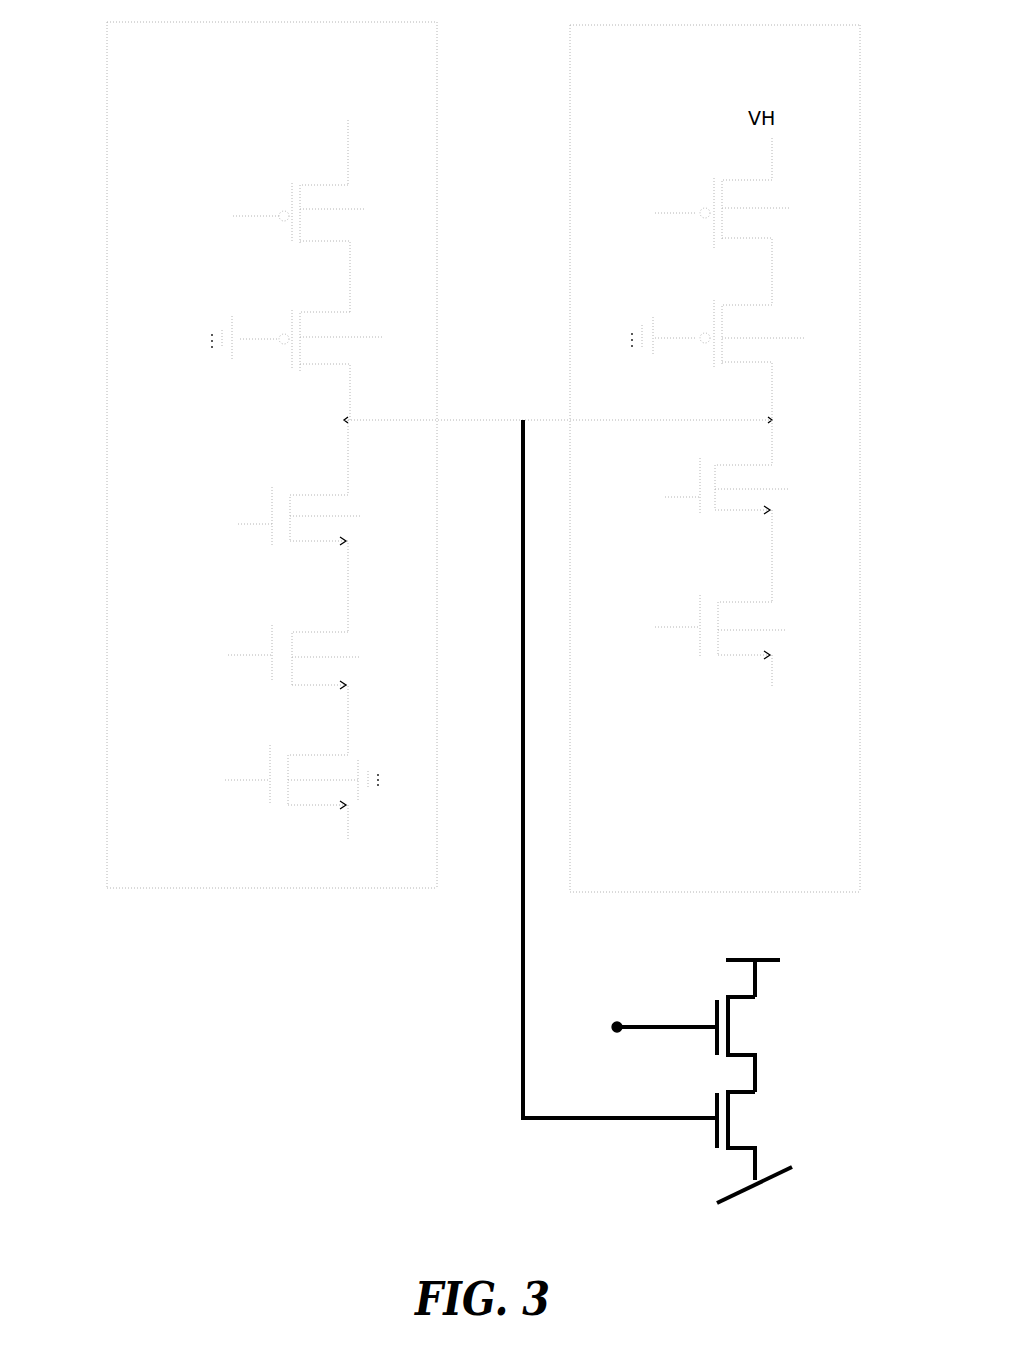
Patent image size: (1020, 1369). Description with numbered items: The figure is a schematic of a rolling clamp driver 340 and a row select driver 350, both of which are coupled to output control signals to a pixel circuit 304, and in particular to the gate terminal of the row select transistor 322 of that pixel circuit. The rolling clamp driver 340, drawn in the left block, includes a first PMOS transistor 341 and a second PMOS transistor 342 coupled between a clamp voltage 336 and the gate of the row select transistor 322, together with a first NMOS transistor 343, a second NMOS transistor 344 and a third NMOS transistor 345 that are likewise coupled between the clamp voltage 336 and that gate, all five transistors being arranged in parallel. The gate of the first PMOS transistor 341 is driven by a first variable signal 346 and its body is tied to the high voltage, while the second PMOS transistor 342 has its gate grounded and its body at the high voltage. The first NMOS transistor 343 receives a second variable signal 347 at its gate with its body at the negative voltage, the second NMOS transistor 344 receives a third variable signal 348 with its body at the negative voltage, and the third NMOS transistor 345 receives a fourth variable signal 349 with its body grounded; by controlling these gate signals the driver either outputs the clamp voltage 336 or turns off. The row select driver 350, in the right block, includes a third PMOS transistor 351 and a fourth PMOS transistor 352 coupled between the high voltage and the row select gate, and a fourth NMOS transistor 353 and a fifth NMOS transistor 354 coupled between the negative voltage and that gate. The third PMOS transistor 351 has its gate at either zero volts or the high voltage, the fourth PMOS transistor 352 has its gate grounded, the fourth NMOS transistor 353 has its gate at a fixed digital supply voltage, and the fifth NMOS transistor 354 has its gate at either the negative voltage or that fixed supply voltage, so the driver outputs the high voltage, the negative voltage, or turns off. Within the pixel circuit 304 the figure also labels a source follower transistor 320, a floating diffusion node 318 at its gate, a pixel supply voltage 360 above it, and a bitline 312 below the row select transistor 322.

The rolling clamp driver 340 is at (107, 72).
The row select driver 350 is at (862, 76).
The clamp voltage Vclamp 336 is at (300, 857).
The first PMOS transistor P0 341 is at (264, 164).
The second PMOS transistor P1 342 is at (279, 295).
The first NMOS transistor N1 343 is at (276, 472).
The second NMOS transistor N2 344 is at (271, 611).
The third NMOS transistor N3 345 is at (269, 734).
The variable signal pcon1 346 is at (208, 224).
The variable signal ncon1 347 is at (200, 527).
The variable signal ncon2 348 is at (184, 672).
The variable signal ncon3 349 is at (207, 787).
The third PMOS transistor P2 351 is at (686, 167).
The fourth PMOS transistor P3 352 is at (694, 287).
The fourth NMOS transistor N4 353 is at (714, 449).
The fifth NMOS transistor N5 354 is at (714, 579).
The pixel circuit 304 is at (957, 992).
The floating diffusion FD1 318 is at (614, 990).
The PIXVDD pixel supply 360 is at (824, 941).
The source follower transistor SF 320 is at (821, 1025).
The row select transistor 322 is at (821, 1118).
The bitline 312 is at (831, 1205).